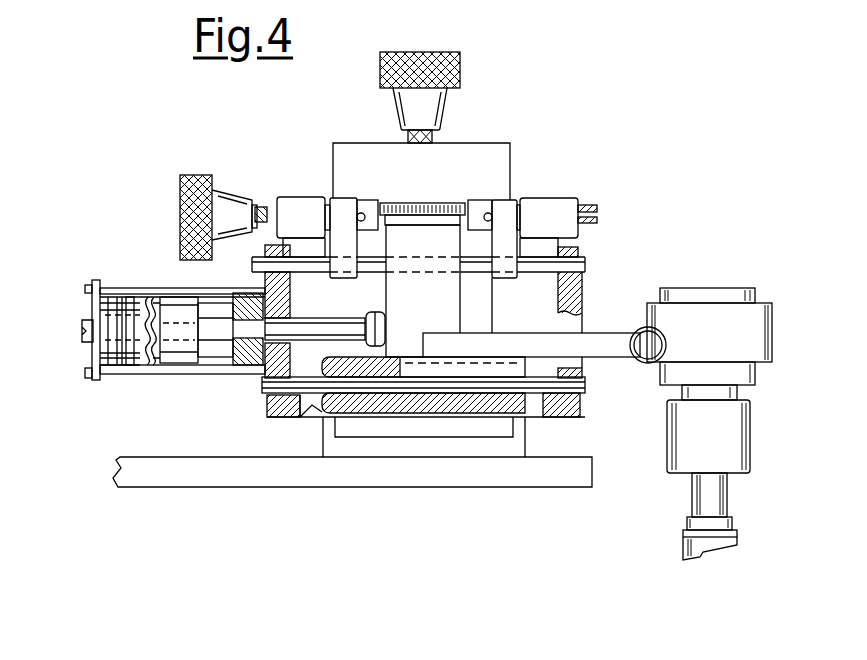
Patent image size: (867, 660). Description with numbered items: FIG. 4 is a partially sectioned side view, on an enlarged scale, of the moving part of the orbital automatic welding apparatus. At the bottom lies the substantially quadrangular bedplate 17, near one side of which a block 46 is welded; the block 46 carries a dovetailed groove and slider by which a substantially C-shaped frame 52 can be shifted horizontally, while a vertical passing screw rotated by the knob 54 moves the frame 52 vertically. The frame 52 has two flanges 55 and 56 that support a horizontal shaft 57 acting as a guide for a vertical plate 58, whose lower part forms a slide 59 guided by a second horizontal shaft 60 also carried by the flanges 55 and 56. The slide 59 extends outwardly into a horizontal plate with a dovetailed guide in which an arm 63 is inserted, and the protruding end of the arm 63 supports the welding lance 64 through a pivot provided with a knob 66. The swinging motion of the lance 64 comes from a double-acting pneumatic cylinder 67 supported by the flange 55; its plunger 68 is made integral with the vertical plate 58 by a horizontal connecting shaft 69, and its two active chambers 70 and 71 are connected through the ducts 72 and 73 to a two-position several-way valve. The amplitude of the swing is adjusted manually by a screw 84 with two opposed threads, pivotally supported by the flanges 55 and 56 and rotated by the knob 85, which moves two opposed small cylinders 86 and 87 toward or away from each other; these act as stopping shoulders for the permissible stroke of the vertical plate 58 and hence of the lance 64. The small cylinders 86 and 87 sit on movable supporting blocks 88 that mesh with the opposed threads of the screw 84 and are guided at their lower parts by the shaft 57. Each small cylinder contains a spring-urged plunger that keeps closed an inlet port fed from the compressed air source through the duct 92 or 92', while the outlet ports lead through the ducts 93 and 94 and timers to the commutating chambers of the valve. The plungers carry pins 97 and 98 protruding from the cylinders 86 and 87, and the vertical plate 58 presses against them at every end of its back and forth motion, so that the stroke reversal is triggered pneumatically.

The bedplate 17 is at (235, 475).
The block 46 is at (516, 447).
The C-shaped frame 52 is at (478, 162).
The knob 54 is at (430, 98).
The flange 55 is at (282, 297).
The flange 56 is at (560, 298).
The horizontal shaft 57 is at (582, 260).
The vertical plate 58 is at (433, 309).
The slide 59 is at (318, 410).
The horizontal shaft 60 is at (265, 387).
The arm 63 is at (614, 350).
The welding lance 64 is at (663, 427).
The knob 66 is at (642, 337).
The double-acting pneumatic cylinder 67 is at (147, 362).
The plunger 68 is at (188, 352).
The horizontal connecting shaft 69 is at (327, 321).
The active chamber 70 is at (152, 300).
The active chamber 71 is at (207, 300).
The duct 72 is at (130, 310).
The duct 73 is at (220, 295).
The screw 84 is at (403, 205).
The knob 85 is at (228, 207).
The small cylinder 86 is at (293, 210).
The small cylinder 87 is at (563, 207).
The movable supporting block 88 is at (370, 202).
The duct 92 is at (305, 180).
The duct 92' is at (555, 166).
The duct 93 is at (268, 218).
The duct 94 is at (598, 218).
The pin 97 is at (360, 203).
The pin 98 is at (483, 213).